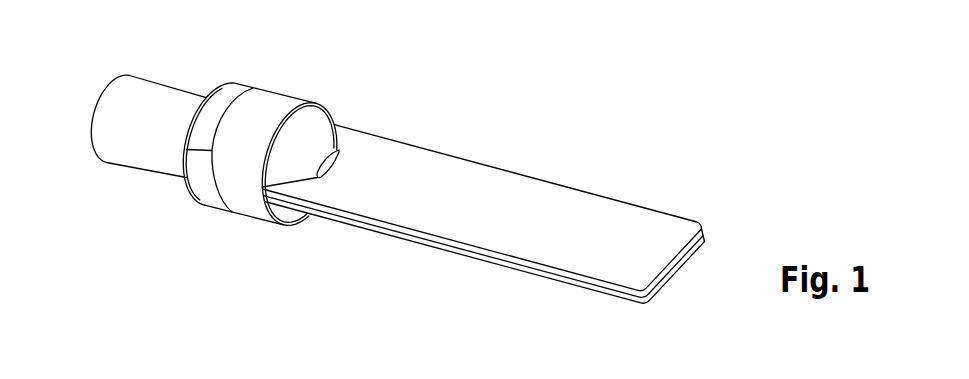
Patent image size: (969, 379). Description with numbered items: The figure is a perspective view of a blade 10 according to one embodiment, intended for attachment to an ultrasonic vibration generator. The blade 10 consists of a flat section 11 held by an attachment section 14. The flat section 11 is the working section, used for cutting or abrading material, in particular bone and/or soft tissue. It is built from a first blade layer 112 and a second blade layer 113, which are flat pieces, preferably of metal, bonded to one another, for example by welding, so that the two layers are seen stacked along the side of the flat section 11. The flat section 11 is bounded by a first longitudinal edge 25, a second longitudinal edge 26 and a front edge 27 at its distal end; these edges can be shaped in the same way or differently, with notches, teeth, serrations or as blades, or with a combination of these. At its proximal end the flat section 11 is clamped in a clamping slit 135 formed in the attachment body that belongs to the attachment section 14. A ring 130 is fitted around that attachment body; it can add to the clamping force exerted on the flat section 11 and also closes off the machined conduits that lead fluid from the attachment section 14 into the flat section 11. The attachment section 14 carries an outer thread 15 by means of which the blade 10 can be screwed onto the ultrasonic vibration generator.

The blade 10 is at (405, 174).
The flat section 11 is at (491, 218).
The attachment section 14 is at (224, 115).
The outer thread 15 is at (152, 82).
The first longitudinal edge 25 is at (589, 298).
The second longitudinal edge 26 is at (622, 193).
The front edge 27 is at (718, 234).
The first blade layer 112 is at (408, 235).
The second blade layer 113 is at (457, 253).
The ring 130 is at (282, 100).
The clamping slit 135 is at (339, 150).